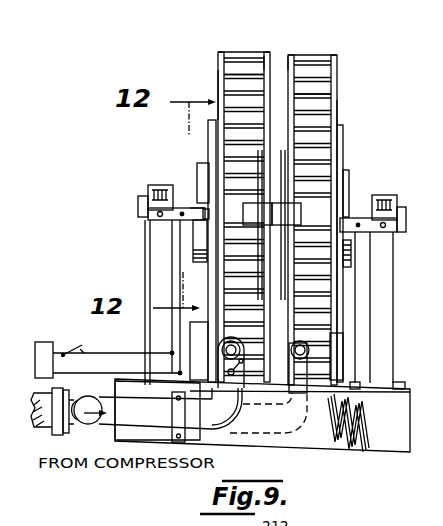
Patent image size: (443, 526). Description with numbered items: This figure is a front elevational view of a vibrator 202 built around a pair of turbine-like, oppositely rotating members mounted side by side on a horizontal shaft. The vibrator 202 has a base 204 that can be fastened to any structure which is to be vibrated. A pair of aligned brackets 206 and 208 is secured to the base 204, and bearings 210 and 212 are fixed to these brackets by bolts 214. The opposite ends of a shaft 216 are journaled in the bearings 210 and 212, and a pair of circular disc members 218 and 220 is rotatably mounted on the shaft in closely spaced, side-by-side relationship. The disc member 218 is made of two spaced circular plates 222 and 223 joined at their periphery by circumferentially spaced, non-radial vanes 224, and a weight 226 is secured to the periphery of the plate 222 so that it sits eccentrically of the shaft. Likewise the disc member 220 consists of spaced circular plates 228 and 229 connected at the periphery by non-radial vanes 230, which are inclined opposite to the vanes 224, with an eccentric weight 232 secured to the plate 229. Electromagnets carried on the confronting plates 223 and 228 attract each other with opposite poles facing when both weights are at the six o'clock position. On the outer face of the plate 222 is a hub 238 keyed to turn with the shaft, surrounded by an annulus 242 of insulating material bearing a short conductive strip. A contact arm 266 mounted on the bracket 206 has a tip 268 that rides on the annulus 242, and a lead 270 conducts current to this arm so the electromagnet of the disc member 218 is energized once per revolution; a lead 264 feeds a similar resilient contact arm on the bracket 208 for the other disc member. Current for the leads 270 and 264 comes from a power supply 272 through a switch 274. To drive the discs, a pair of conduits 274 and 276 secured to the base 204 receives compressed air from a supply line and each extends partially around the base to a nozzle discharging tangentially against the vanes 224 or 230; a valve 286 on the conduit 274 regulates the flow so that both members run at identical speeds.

The vibrator 202 is at (355, 97).
The base 204 is at (388, 452).
The bracket 206 is at (152, 262).
The bracket 208 is at (395, 250).
The bearing 210 is at (150, 186).
The bearing 212 is at (379, 194).
The bolts 214 is at (148, 189).
The shaft 216 is at (401, 209).
The circular disc member 218 is at (217, 46).
The circular disc member 220 is at (340, 49).
The circular plate 222 is at (218, 86).
The circular plate 223 is at (276, 62).
The non-radial vanes 224 is at (237, 73).
The weight 226 is at (190, 325).
The circular plate 228 is at (289, 55).
The circular plate 229 is at (337, 114).
The non-radial vanes 230 is at (326, 80).
The weight 232 is at (370, 334).
The hub 238 is at (198, 172).
The annulus of insulating material 242 is at (209, 128).
The lead 264 is at (355, 270).
The contact arm 266 is at (190, 204).
The tip 268 is at (150, 237).
The lead 270 is at (143, 222).
The power supply 272 is at (47, 342).
The conduit 274 is at (154, 418).
The conduit 276 is at (69, 457).
The valve 286 is at (238, 407).